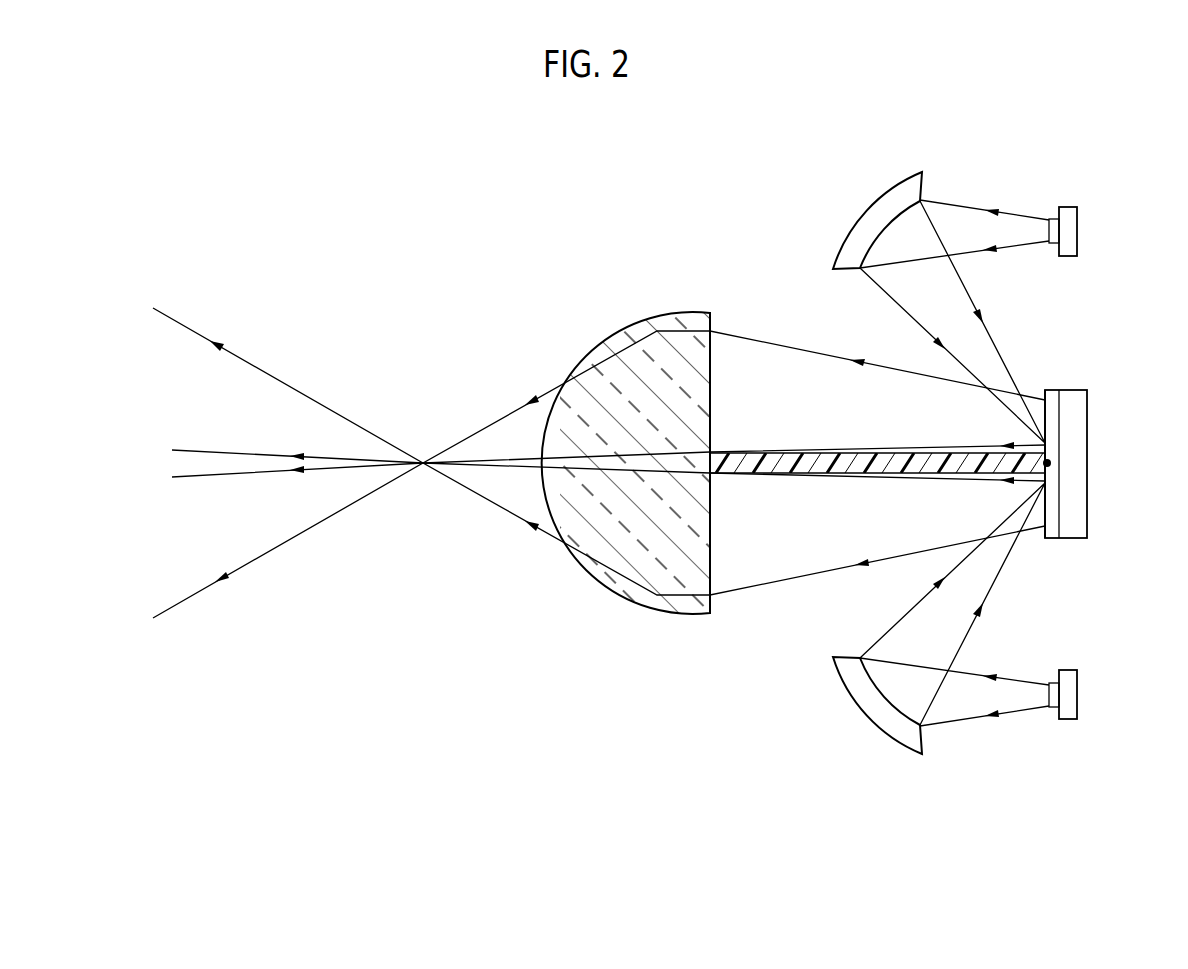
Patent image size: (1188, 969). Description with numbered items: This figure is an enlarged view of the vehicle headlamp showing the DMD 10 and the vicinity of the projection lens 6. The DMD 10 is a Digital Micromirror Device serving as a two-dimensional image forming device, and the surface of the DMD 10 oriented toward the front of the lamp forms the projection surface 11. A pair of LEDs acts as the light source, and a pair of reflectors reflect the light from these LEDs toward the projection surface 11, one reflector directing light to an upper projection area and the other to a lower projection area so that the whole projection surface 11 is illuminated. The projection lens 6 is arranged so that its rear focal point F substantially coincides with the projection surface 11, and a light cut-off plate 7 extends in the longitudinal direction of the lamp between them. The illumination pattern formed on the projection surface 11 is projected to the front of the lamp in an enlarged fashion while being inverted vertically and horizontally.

The projection lens 6 is at (648, 563).
The light cut-off plate 7 is at (772, 452).
The DMD 10 is at (1110, 373).
The projection surface 11 is at (1045, 512).
The rear focal point F is at (1047, 463).